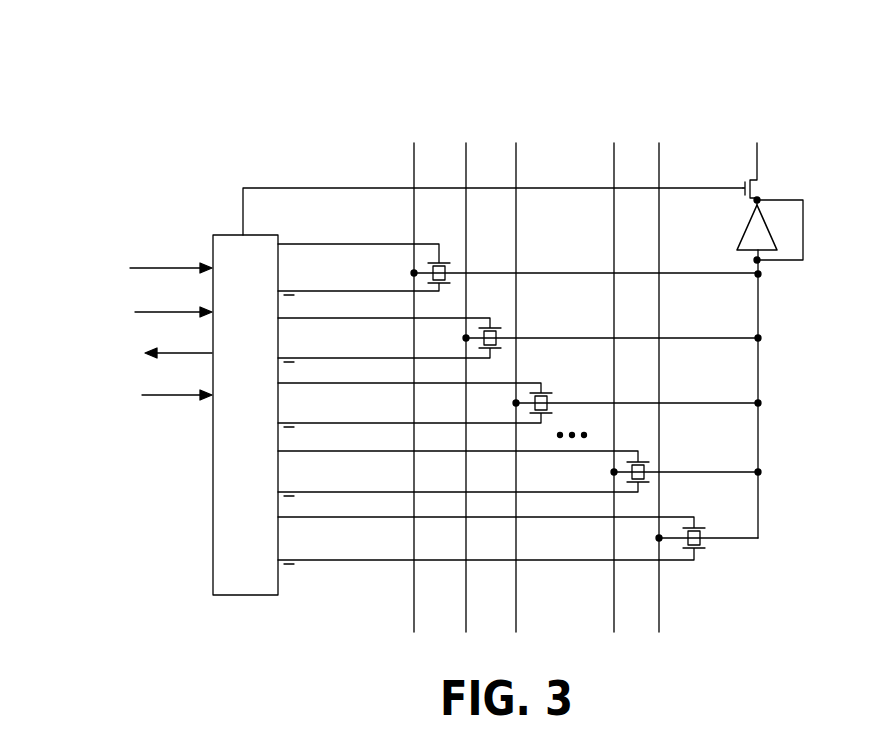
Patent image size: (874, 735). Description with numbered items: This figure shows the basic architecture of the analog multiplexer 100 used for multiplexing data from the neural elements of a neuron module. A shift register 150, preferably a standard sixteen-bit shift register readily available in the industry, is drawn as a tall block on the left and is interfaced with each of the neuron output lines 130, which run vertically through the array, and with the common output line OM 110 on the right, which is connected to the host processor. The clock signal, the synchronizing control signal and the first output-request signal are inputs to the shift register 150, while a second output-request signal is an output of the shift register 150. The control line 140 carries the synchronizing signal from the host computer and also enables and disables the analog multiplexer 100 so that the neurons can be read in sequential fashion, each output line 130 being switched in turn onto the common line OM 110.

The analog multiplexer 100 is at (262, 130).
The common output line OM 110 is at (777, 110).
The output lines NO 130 is at (520, 137).
The control line PHI2 140 is at (116, 405).
The shift register 150 is at (218, 597).